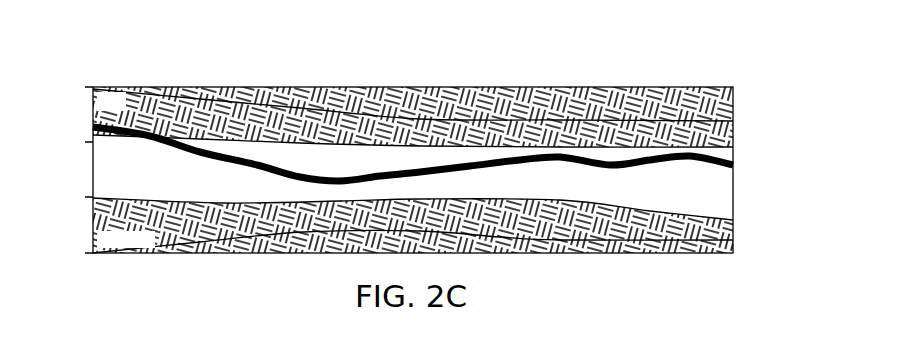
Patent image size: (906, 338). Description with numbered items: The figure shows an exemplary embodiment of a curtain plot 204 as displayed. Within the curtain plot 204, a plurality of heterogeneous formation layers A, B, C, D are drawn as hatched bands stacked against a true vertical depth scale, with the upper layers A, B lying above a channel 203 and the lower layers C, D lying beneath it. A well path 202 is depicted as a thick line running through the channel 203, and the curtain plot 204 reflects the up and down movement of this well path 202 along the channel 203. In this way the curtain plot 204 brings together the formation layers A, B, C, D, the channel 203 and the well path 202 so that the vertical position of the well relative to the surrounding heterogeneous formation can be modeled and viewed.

The well path 202 is at (425, 170).
The channel 203 is at (255, 138).
The curtain plot 204 is at (321, 64).
The formation layer A is at (733, 101).
The formation layer B is at (733, 133).
The formation layer C is at (733, 223).
The formation layer D is at (733, 244).